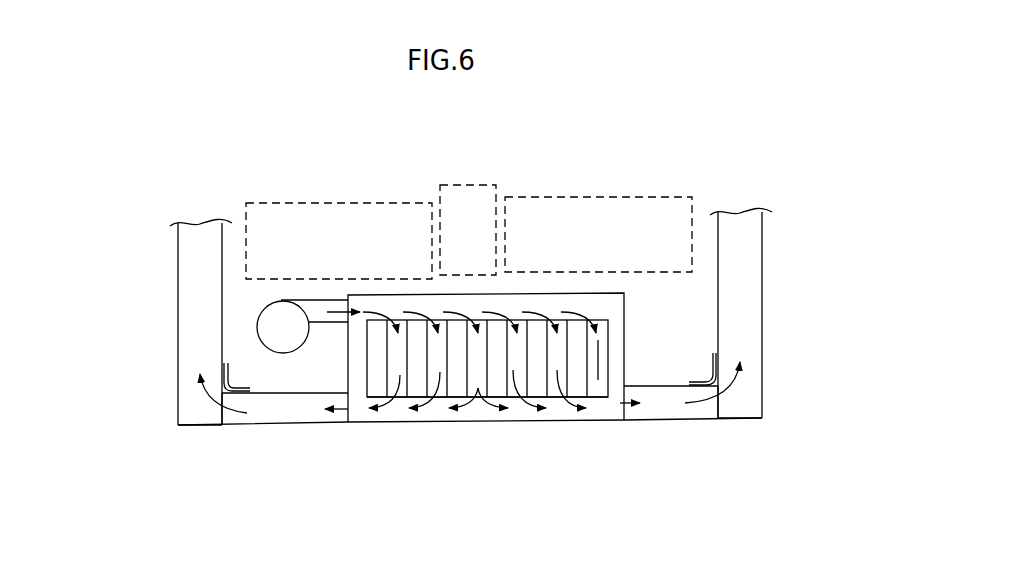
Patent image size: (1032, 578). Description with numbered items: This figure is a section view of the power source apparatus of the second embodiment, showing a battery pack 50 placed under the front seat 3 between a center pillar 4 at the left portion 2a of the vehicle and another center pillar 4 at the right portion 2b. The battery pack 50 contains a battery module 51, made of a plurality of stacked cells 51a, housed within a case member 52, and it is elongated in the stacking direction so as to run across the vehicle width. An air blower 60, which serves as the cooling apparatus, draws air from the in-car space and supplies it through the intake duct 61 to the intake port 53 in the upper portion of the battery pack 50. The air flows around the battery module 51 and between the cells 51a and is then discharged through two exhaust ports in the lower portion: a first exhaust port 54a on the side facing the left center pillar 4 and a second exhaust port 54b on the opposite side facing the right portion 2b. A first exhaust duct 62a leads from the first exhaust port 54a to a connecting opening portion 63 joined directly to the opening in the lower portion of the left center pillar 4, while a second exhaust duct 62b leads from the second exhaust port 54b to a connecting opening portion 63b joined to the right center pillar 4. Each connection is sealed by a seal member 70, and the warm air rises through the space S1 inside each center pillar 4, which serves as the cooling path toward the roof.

The front seat 3 is at (330, 203).
The center pillar 4 is at (176, 257).
The space S1 is at (197, 303).
The left portion 2a is at (178, 408).
The right portion 2b is at (762, 400).
The air blower 60 is at (282, 320).
The intake duct 61 is at (333, 305).
The intake port 53 is at (352, 300).
The battery pack 50 is at (524, 409).
The battery module 51 is at (610, 329).
The cells 51a is at (600, 358).
The case member 52 is at (517, 422).
The first exhaust port 54a is at (350, 413).
The second exhaust port 54b is at (617, 410).
The first exhaust duct 62a is at (307, 412).
The second exhaust duct 62b is at (665, 403).
The connecting opening portion 63 is at (237, 417).
The connecting opening portion 63b is at (708, 412).
The seal member 70 is at (240, 388).